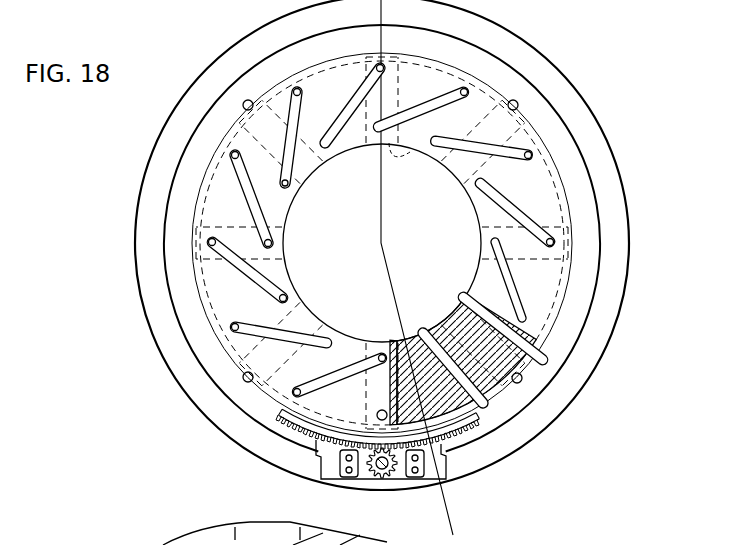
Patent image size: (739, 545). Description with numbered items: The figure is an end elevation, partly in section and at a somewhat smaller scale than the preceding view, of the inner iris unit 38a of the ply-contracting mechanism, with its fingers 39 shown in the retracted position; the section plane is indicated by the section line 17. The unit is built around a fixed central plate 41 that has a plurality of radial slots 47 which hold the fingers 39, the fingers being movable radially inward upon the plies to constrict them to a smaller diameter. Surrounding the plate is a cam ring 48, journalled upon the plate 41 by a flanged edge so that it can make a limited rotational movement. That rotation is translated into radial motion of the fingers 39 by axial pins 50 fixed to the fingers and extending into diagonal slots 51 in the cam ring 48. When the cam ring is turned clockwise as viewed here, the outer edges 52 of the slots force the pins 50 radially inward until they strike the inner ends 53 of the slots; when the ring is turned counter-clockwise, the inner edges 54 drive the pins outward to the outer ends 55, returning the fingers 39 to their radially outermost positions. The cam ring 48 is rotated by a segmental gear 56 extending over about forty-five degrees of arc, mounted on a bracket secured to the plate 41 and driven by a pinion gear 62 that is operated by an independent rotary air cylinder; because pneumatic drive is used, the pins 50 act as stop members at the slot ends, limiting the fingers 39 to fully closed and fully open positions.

The inner iris unit 38a is at (555, 57).
The cam ring 48 is at (588, 215).
The section line 17 is at (424, 521).
The fingers 39 is at (447, 172).
The radial slots 47 is at (394, 160).
The central plate 41 is at (521, 381).
The outer ends 55 is at (294, 88).
The inner edges 54 is at (258, 205).
The axial pins 50 is at (548, 232).
The diagonal slots 51 is at (506, 268).
The inner ends 53 is at (300, 181).
The segmental gear 56 is at (320, 444).
The pinion gear 62 is at (384, 480).
The outer edges 52 is at (198, 542).